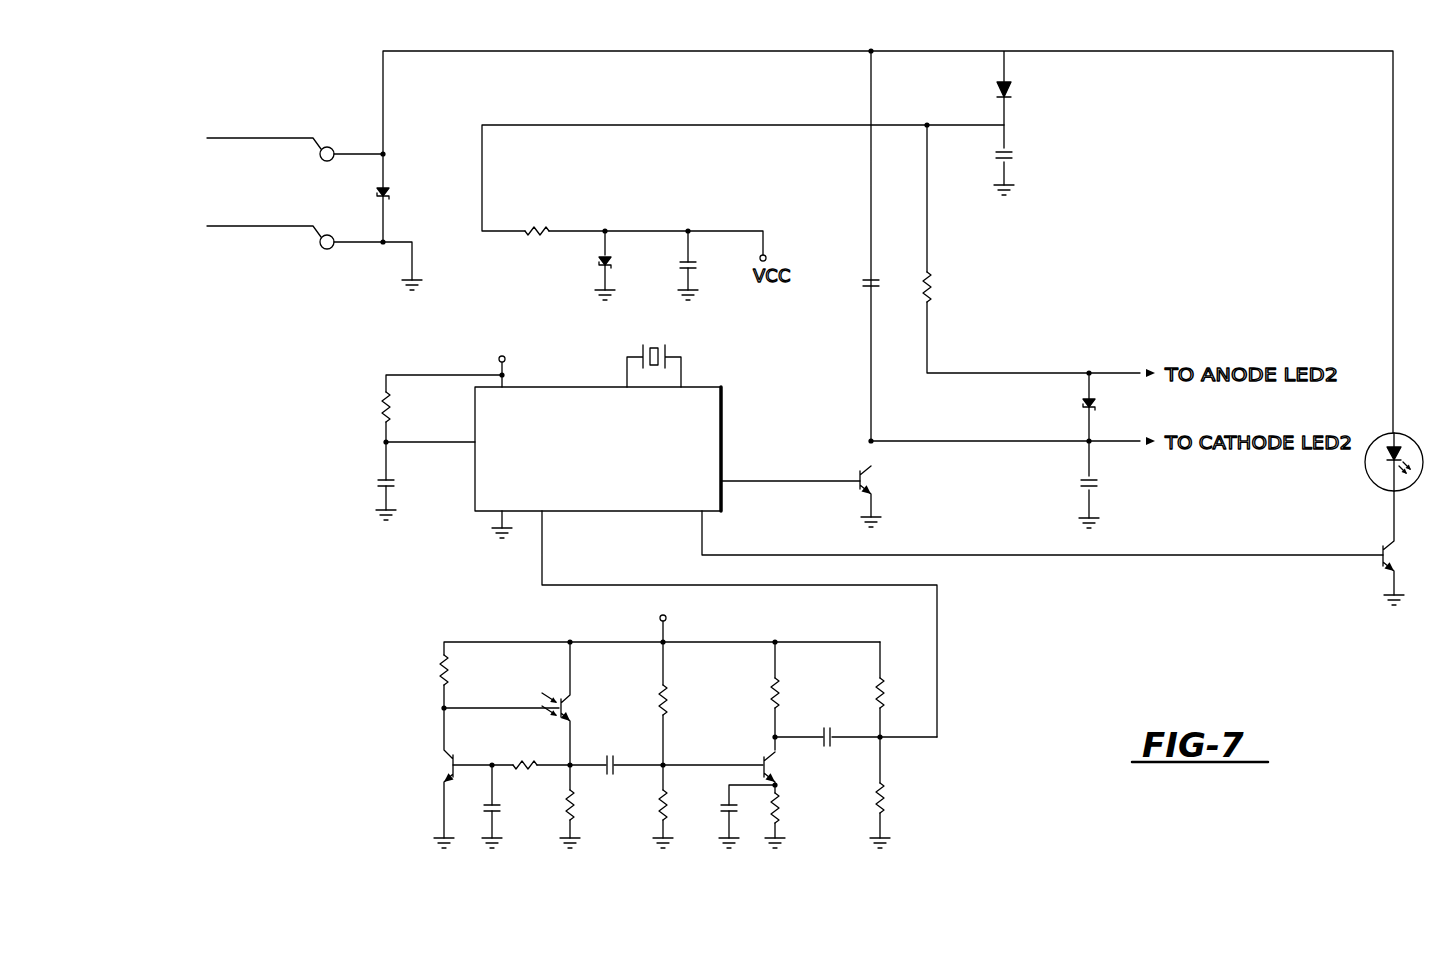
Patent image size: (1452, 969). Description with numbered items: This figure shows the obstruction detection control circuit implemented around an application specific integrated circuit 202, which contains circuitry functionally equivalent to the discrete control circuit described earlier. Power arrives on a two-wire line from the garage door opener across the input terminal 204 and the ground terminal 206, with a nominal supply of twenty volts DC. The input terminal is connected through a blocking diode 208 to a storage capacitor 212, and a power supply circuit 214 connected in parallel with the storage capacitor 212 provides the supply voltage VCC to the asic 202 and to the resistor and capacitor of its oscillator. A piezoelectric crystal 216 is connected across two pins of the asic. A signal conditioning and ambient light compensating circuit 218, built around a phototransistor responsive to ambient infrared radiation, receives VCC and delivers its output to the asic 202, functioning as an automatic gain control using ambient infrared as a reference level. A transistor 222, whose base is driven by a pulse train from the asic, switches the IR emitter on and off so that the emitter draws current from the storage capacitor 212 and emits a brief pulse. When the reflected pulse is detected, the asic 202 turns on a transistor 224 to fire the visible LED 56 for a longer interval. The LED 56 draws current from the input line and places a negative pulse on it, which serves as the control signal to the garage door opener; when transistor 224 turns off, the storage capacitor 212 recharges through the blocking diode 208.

The input terminal 204 is at (328, 146).
The ground terminal 206 is at (327, 250).
The blocking diode 208 is at (997, 92).
The storage capacitor 212 is at (1010, 150).
The power supply circuit 214 is at (704, 226).
The piezoelectric crystal 216 is at (668, 352).
The application specific integrated circuit 202 is at (732, 411).
The transistor 222 is at (858, 472).
The visible LED 56 is at (1405, 436).
The transistor 224 is at (1380, 562).
The signal conditioning and ambient light compensating circuit 218 is at (590, 632).